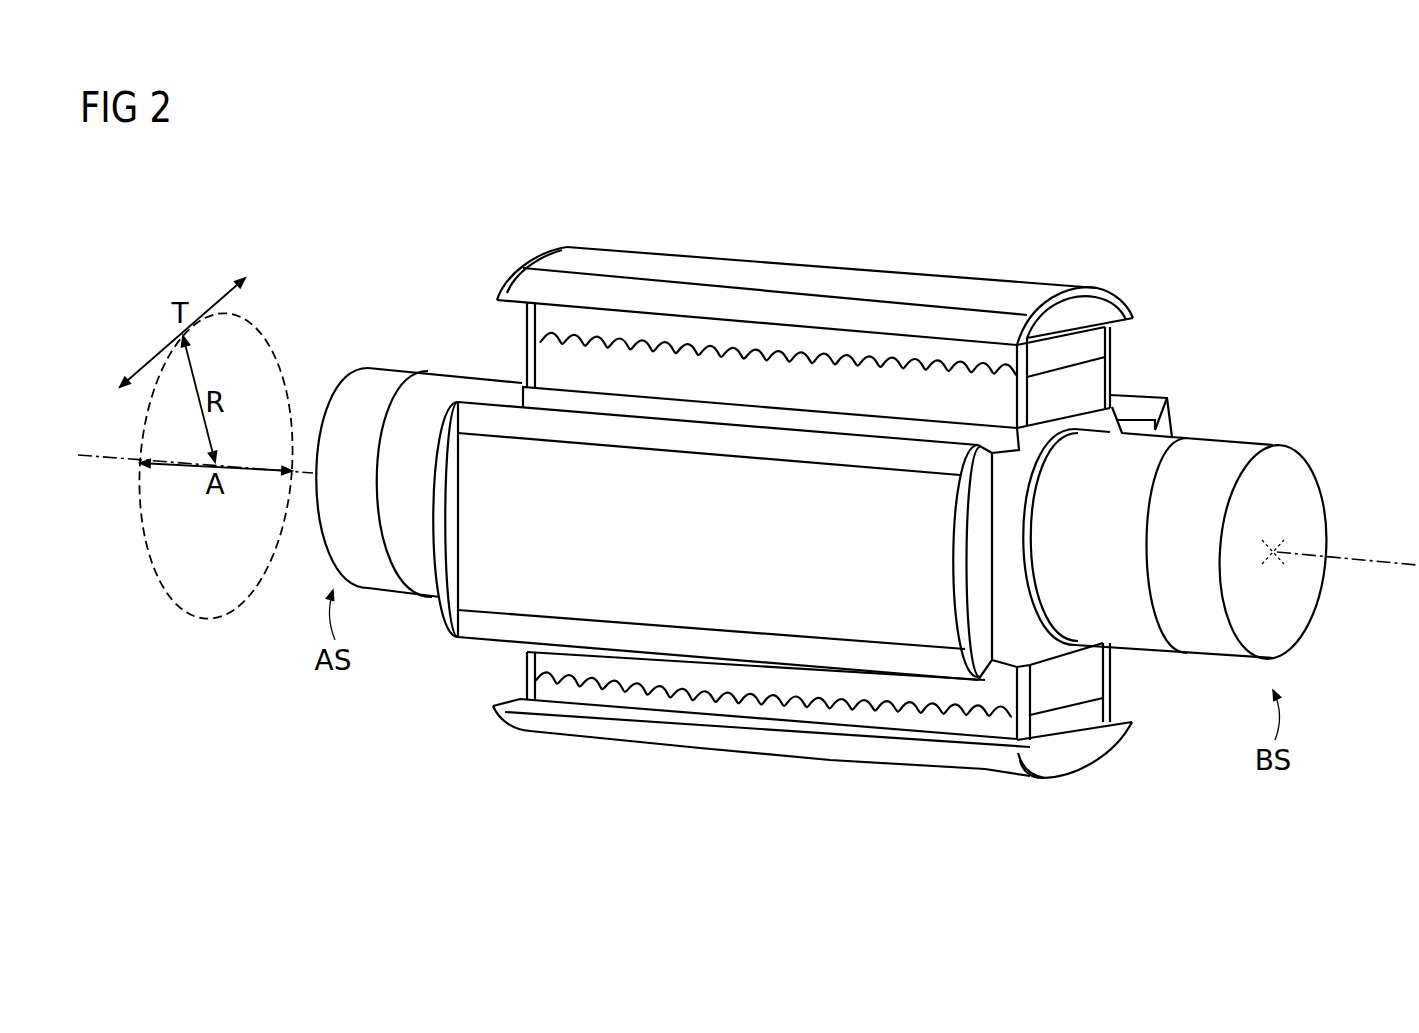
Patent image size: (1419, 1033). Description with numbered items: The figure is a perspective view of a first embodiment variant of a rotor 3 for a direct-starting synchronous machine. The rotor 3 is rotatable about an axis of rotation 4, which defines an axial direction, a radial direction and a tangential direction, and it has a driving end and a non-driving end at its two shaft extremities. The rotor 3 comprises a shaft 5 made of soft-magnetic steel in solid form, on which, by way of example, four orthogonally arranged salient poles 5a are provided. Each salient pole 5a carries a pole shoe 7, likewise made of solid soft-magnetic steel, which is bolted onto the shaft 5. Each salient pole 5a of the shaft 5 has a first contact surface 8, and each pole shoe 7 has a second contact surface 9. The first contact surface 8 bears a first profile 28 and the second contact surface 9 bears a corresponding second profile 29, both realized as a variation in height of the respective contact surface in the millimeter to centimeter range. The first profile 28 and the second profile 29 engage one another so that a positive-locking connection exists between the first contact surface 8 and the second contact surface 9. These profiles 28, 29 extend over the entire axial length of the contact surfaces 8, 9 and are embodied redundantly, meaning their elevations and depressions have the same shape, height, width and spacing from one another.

The rotor 3 is at (1175, 190).
The axis of rotation 4 is at (1367, 553).
The shaft 5 is at (452, 390).
The salient pole 5a is at (1093, 372).
The pole shoe 7 is at (870, 282).
The first contact surface 8 is at (540, 342).
The second contact surface 9 is at (540, 333).
The first profile 28 is at (905, 375).
The second profile 29 is at (917, 350).